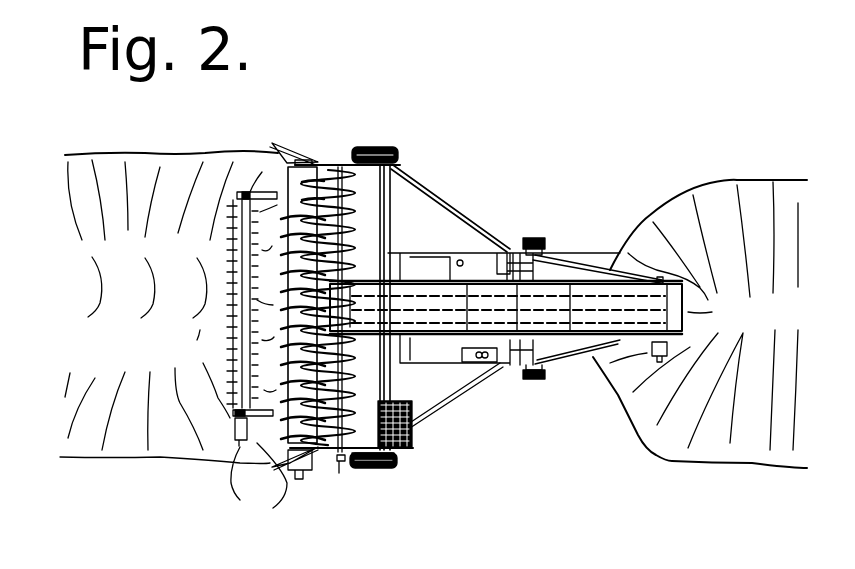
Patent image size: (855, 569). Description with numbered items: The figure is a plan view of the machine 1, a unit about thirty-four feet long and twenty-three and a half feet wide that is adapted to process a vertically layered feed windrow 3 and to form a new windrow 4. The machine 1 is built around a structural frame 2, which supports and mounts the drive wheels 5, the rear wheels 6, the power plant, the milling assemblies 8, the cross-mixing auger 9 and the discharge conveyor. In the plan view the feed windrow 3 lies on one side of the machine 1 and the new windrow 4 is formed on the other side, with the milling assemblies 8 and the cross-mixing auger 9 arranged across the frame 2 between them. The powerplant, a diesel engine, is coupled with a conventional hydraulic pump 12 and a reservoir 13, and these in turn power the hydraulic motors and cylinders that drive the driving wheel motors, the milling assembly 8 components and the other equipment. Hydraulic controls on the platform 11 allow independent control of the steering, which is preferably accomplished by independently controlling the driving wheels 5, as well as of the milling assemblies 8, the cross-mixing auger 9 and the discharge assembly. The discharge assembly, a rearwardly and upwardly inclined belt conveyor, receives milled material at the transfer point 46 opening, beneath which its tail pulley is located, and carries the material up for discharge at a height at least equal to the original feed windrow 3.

The machine 1 is at (476, 294).
The structural frame 2 is at (503, 168).
The feed windrow 3 is at (179, 164).
The new windrow 4 is at (684, 208).
The drive wheels 5 is at (399, 153).
The rear wheels 6 is at (547, 244).
The milling assemblies 8 is at (287, 478).
The cross-mixing auger 9 is at (342, 470).
The platform 11 is at (414, 433).
The hydraulic pump 12 is at (590, 353).
The reservoir 13 is at (468, 360).
The transfer point 46 is at (357, 468).